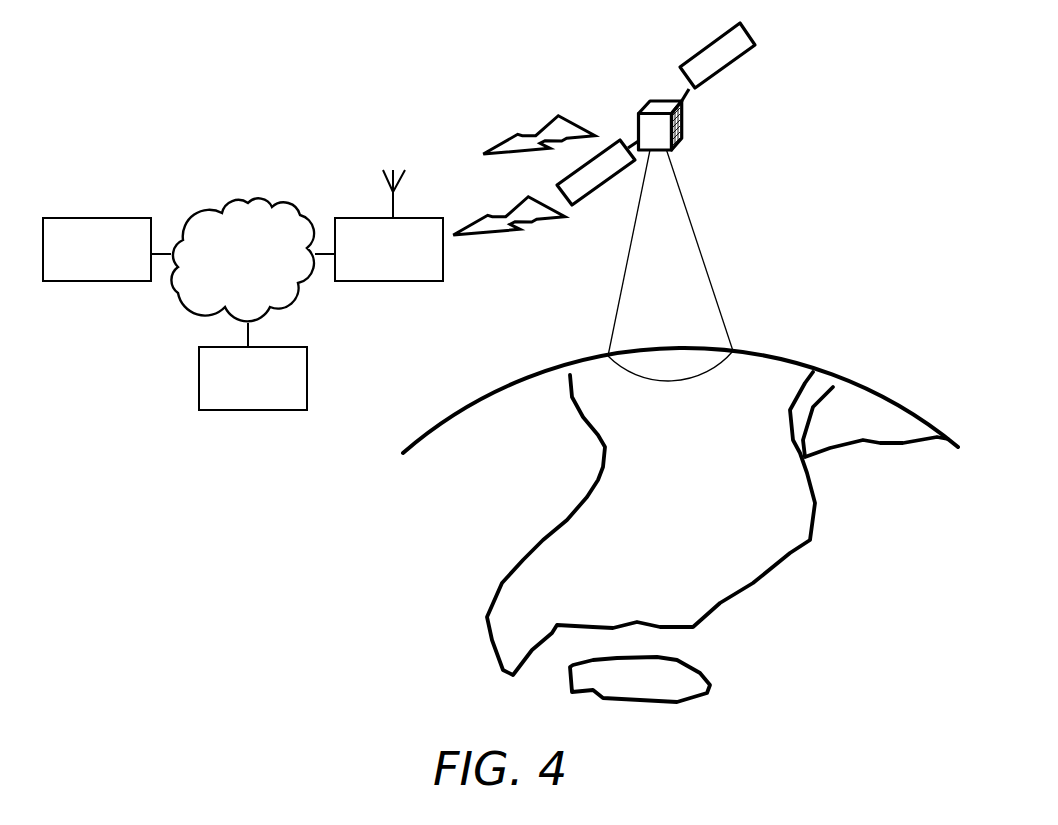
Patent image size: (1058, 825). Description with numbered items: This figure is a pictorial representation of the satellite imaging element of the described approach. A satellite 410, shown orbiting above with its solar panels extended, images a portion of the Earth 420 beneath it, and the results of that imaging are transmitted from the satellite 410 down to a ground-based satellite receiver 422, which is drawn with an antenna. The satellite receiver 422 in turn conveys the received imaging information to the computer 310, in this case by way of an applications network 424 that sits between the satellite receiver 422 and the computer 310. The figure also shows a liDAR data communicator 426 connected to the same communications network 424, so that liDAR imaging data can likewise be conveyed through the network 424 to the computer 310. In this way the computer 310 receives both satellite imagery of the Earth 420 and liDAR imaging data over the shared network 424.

The computer 310 is at (125, 268).
The satellite 410 is at (682, 132).
The Earth 420 is at (715, 358).
The satellite receiver 422 is at (417, 268).
The applications network 424 is at (215, 267).
The liDAR data communicator 426 is at (225, 398).